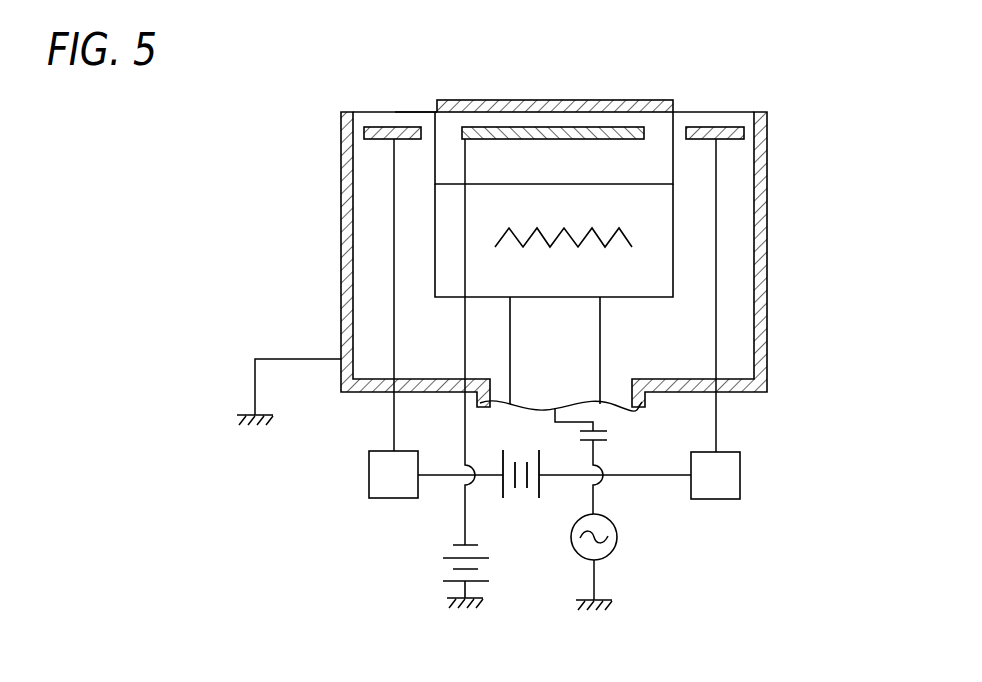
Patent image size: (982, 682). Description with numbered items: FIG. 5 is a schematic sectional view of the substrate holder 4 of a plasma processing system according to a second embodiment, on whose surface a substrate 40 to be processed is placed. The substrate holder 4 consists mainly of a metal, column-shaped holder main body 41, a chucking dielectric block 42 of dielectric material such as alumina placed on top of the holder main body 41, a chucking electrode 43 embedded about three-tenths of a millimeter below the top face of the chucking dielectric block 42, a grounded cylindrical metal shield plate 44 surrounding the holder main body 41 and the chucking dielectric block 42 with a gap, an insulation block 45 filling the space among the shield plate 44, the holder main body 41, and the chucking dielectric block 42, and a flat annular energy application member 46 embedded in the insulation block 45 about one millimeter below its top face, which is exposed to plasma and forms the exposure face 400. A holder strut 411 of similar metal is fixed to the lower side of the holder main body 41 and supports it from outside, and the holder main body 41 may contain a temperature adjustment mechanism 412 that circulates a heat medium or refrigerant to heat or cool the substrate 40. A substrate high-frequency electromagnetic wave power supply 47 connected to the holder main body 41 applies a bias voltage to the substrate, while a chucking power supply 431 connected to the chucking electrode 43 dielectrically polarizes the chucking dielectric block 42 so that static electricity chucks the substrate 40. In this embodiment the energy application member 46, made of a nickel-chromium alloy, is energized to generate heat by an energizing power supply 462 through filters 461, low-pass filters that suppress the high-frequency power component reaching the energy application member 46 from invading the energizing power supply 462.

The substrate holder 4 is at (637, 90).
The substrate 40 is at (569, 100).
The exposure face 400 is at (405, 111).
The holder main body 41 is at (652, 240).
The holder strut 411 is at (580, 367).
The temperature adjustment mechanism 412 is at (610, 242).
The chucking dielectric block 42 is at (652, 165).
The chucking electrode 43 is at (510, 127).
The chucking power supply 431 is at (447, 568).
The shield plate 44 is at (767, 337).
The insulation block 45 is at (367, 188).
The energy application member 46 is at (380, 127).
The filter 461 is at (369, 487).
The energizing power supply 462 is at (527, 500).
The substrate high-frequency electromagnetic wave power supply 47 is at (617, 540).